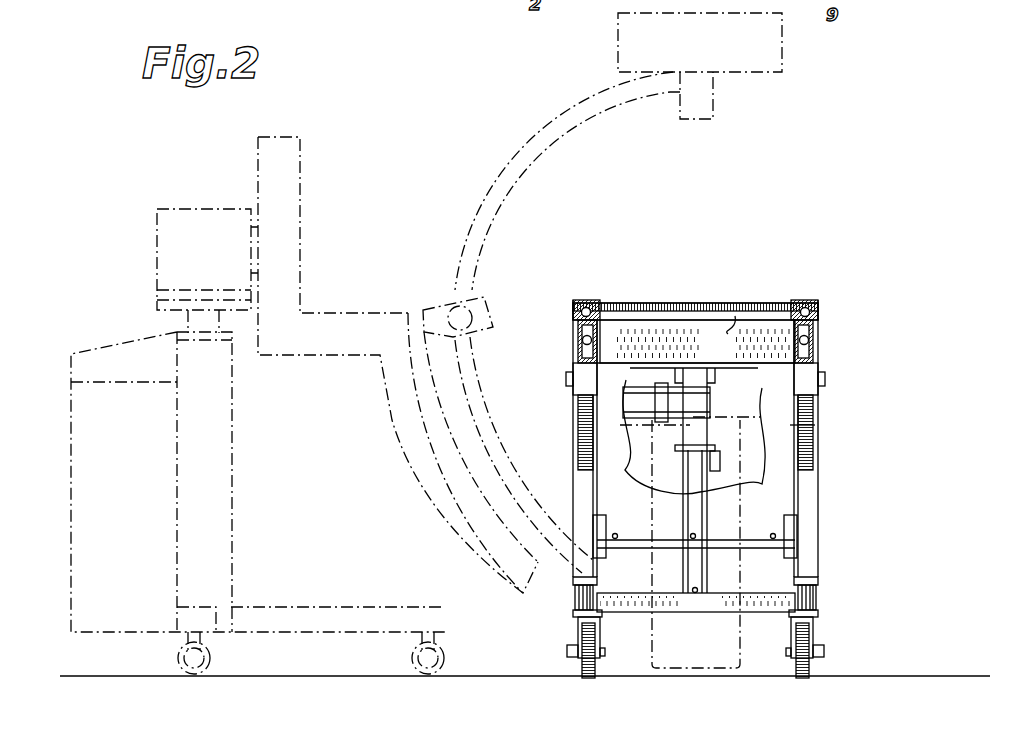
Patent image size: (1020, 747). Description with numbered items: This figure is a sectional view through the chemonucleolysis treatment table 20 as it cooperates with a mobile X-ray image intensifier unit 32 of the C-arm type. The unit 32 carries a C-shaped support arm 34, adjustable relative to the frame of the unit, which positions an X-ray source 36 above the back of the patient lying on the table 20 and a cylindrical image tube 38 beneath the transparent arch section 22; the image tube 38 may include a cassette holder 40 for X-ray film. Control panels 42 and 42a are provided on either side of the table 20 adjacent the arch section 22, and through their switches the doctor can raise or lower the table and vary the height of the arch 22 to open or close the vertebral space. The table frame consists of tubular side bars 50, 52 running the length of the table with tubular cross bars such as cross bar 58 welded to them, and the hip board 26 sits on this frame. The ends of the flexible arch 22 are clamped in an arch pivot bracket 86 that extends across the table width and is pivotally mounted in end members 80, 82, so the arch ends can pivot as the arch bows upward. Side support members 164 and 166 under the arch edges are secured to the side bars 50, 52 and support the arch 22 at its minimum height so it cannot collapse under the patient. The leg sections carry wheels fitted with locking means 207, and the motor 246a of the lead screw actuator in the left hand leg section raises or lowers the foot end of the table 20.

The chemonucleolysis treatment table 20 is at (823, 246).
The transparent arch section 22 is at (693, 302).
The hip board 26 is at (577, 419).
The mobile X-ray image intensifier unit 32 is at (231, 497).
The C-shaped support arm 34 is at (503, 177).
The X-ray source 36 is at (772, 66).
The cylindrical image tube 38 is at (741, 650).
The cassette holder 40 is at (818, 421).
The control panel 42 is at (575, 392).
The control panel 42a is at (818, 392).
The tubular side bar 50 is at (818, 343).
The tubular side bar 52 is at (577, 345).
The tubular cross bar 58 is at (652, 330).
The end member 80 is at (576, 313).
The end member 82 is at (818, 313).
The arch pivot bracket 86 is at (735, 316).
The side support member 164 is at (818, 293).
The side support member 166 is at (580, 295).
The locking means 207 is at (567, 650).
The motor 246a is at (640, 393).